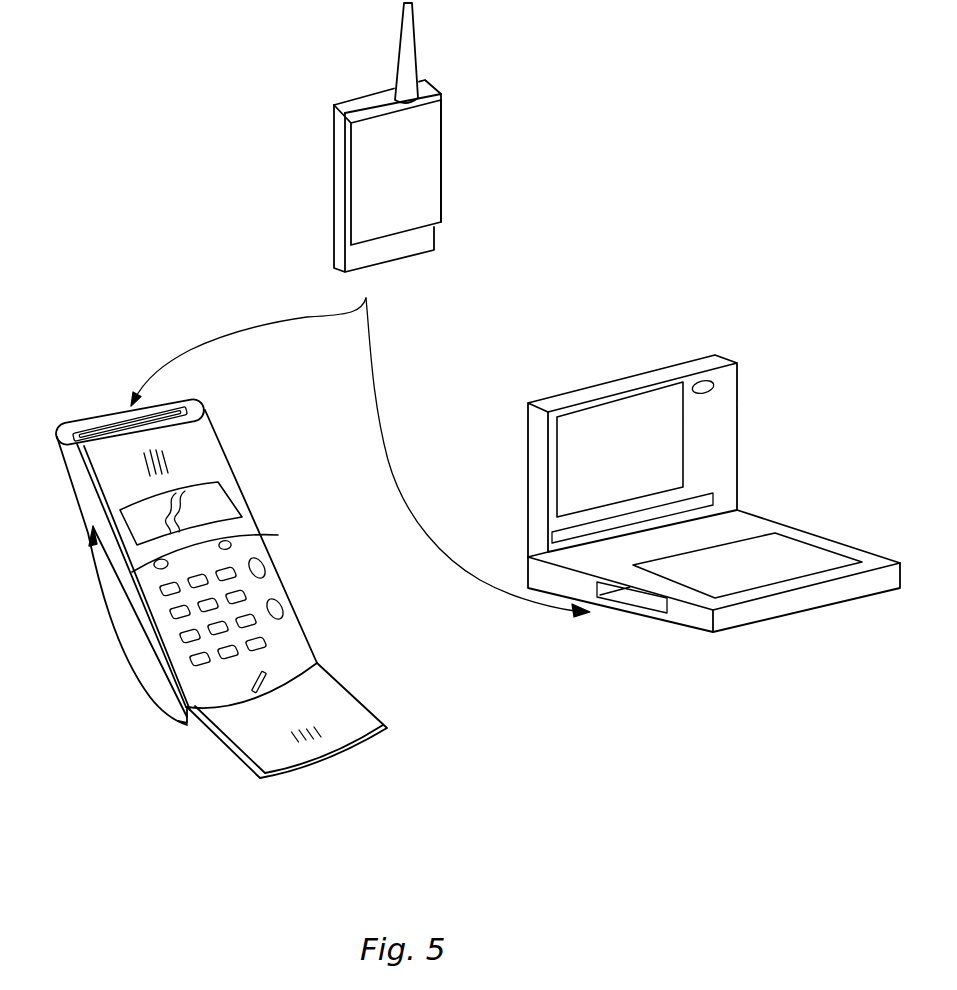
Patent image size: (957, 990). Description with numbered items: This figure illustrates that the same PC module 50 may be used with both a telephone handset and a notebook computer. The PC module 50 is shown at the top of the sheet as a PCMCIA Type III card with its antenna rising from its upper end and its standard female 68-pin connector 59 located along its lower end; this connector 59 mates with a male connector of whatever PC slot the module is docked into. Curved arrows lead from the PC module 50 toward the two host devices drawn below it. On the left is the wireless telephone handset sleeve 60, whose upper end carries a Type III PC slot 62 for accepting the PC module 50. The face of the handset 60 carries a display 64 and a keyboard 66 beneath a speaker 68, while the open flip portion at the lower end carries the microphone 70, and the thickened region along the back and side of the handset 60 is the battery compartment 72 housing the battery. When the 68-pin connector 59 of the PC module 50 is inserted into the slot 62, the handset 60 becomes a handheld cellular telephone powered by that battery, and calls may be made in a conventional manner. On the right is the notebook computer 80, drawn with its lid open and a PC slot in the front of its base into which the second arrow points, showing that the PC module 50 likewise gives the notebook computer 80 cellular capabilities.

The PC module 50 is at (431, 154).
The female 68-pin connector 59 is at (398, 252).
The wireless telephone handset sleeve 60 is at (208, 596).
The Type III PC slot 62 is at (117, 424).
The display 64 is at (226, 480).
The keyboard 66 is at (258, 560).
The speaker 68 is at (140, 468).
The microphone 70 is at (322, 755).
The battery compartment 72 is at (128, 642).
The notebook computer 80 is at (683, 363).